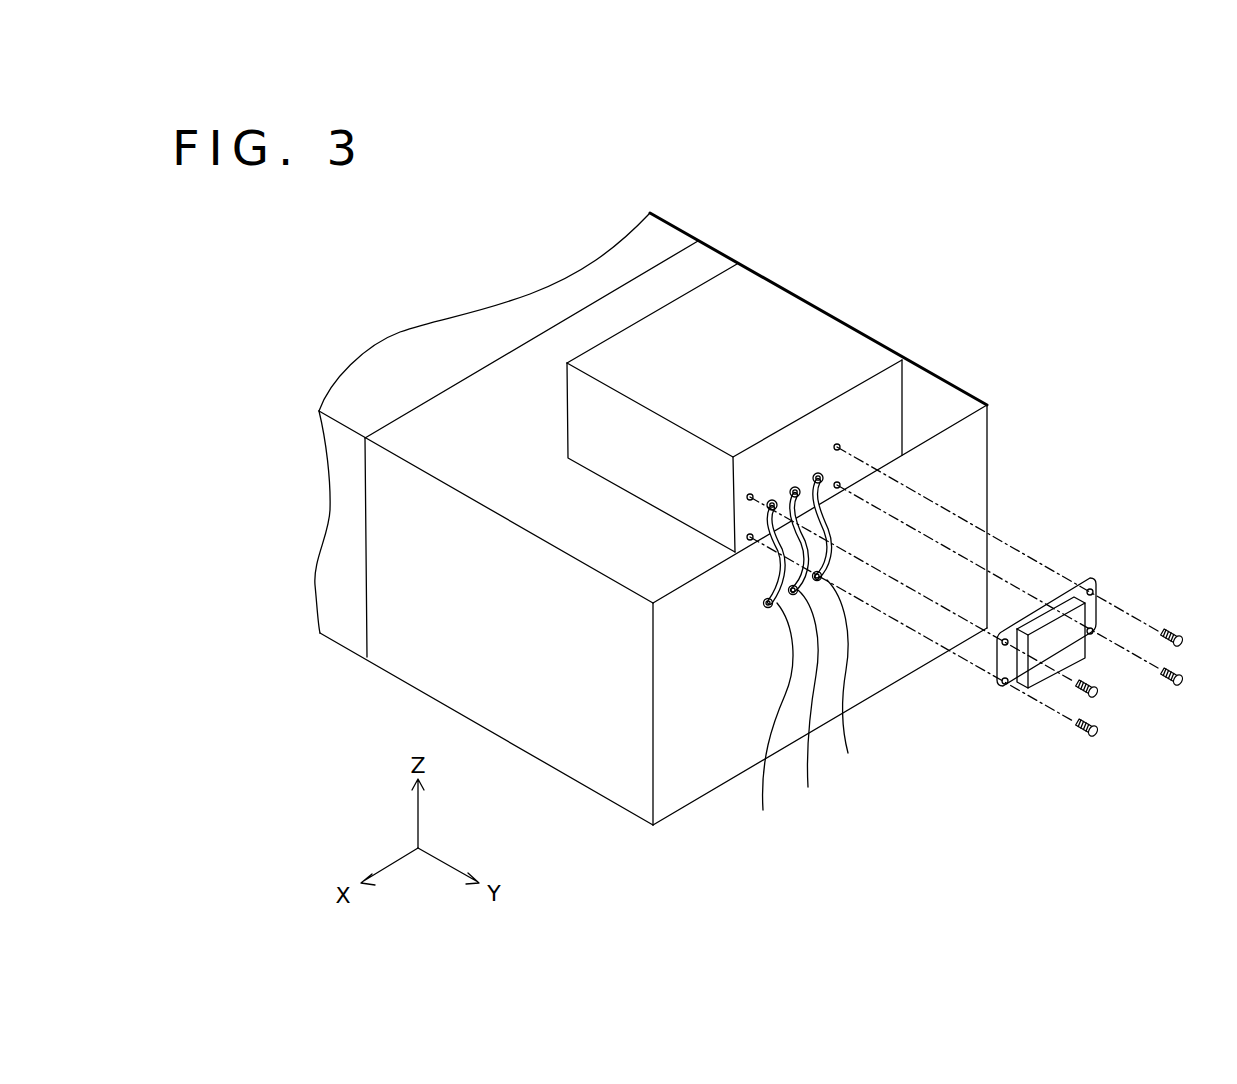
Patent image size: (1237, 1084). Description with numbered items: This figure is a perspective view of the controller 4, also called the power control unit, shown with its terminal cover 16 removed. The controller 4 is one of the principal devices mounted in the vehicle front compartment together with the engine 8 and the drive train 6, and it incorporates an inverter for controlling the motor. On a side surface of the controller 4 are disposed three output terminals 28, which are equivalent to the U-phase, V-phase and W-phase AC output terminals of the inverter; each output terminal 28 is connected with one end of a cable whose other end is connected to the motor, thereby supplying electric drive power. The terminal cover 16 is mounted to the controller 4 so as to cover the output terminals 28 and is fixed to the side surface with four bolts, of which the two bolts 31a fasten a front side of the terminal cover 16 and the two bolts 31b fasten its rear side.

The controller 4 is at (763, 303).
The drive train 6 is at (628, 760).
The engine 8 is at (657, 243).
The terminal cover 16 is at (1070, 603).
The output terminals 28 is at (774, 503).
The bolts 31a is at (1098, 693).
The bolts 31b is at (1183, 641).